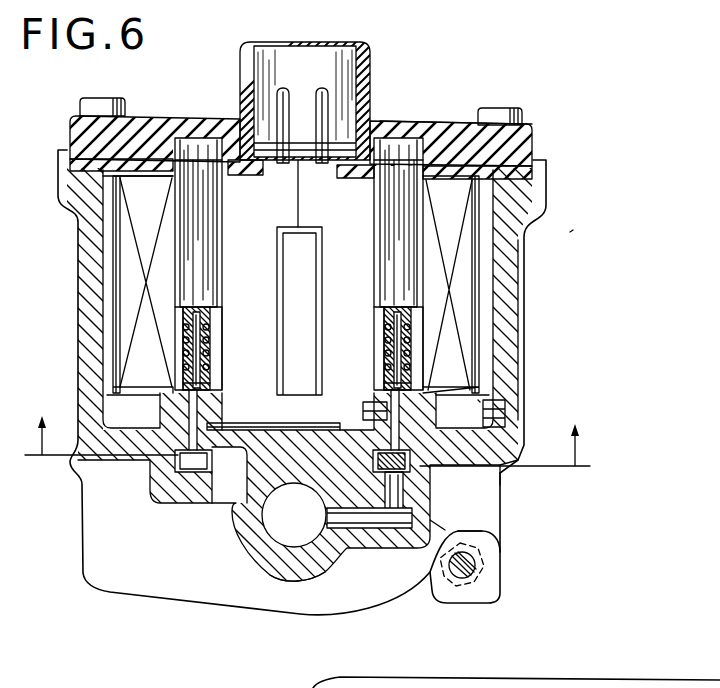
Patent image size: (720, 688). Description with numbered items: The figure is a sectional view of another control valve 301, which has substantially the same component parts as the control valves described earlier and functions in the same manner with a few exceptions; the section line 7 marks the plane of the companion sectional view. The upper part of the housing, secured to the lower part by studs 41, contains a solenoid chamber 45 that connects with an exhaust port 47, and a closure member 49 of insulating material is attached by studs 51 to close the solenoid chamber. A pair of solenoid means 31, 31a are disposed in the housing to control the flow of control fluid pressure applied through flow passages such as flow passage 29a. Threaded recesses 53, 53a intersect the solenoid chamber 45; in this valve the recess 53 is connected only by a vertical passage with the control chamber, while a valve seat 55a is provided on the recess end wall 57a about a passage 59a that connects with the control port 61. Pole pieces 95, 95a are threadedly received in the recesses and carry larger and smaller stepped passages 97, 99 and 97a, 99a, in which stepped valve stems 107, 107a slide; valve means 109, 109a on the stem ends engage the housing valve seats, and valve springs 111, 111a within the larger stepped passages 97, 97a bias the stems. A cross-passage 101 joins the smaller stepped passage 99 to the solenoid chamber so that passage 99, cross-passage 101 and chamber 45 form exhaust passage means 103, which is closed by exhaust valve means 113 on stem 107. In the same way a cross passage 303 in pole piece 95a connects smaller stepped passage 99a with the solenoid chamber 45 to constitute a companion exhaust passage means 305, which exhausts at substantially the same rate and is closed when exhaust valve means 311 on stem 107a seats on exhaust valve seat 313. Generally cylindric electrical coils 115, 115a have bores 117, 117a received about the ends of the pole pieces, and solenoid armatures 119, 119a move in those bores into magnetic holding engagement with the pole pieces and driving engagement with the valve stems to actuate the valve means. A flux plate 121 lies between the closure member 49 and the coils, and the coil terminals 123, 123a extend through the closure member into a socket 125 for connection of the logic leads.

The section line 7- 7 is at (308, 443).
The flow passage 29a is at (396, 535).
The solenoid means 31 is at (157, 202).
The solenoid means 31a is at (451, 284).
The stud 41 is at (493, 573).
The solenoid chamber 45 is at (488, 197).
The exhaust port 47 is at (506, 414).
The closure member 49 is at (413, 123).
The stud 51 is at (500, 110).
The threaded recess 53 is at (170, 445).
The threaded recess 53a is at (434, 432).
The valve seat 55a is at (448, 540).
The recess end wall 57a is at (470, 546).
The passage 59a is at (368, 528).
The control port 61 is at (287, 577).
The pole piece 95 is at (212, 360).
The pole piece 95a is at (380, 327).
The larger stepped passage 97 is at (212, 378).
The larger stepped passage 97a is at (404, 347).
The smaller stepped passage 99 is at (212, 386).
The smaller stepped passage 99a is at (413, 386).
The cross-passage 101 is at (222, 412).
The exhaust passage means 103 is at (289, 405).
The stepped valve stem 107 is at (183, 368).
The stepped valve stem 107a is at (386, 368).
The valve means 109 is at (178, 458).
The valve means 109a is at (376, 476).
The valve spring 111 is at (183, 352).
The valve spring 111a is at (381, 356).
The exhaust valve means 113 is at (178, 478).
The electrical coil 115 is at (133, 282).
The electrical coil 115a is at (455, 288).
The bore 117 is at (217, 195).
The bore 117a is at (372, 205).
The solenoid armature 119 is at (232, 248).
The solenoid armature 119a is at (397, 243).
The flux plate 121 is at (532, 134).
The terminal 123 is at (283, 92).
The terminal 123a is at (322, 92).
The socket 125 is at (365, 78).
The control valve 301 is at (573, 230).
The cross passage 303 is at (363, 410).
The exhaust passage means 305 is at (477, 403).
The exhaust valve means 311 is at (499, 480).
The exhaust valve seat 313 is at (498, 468).